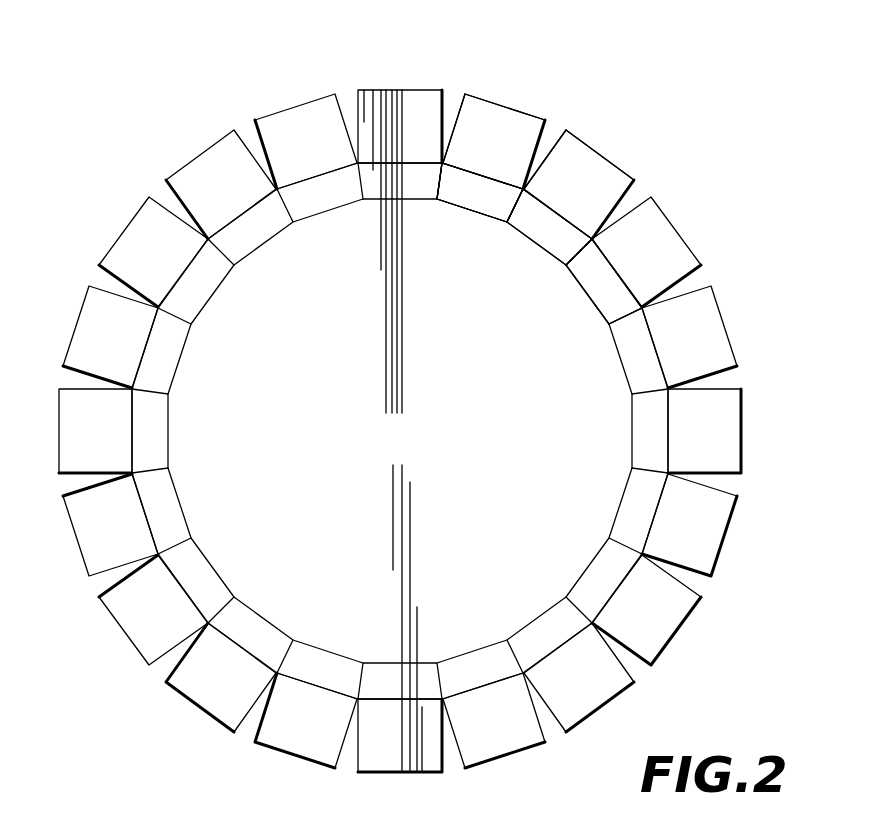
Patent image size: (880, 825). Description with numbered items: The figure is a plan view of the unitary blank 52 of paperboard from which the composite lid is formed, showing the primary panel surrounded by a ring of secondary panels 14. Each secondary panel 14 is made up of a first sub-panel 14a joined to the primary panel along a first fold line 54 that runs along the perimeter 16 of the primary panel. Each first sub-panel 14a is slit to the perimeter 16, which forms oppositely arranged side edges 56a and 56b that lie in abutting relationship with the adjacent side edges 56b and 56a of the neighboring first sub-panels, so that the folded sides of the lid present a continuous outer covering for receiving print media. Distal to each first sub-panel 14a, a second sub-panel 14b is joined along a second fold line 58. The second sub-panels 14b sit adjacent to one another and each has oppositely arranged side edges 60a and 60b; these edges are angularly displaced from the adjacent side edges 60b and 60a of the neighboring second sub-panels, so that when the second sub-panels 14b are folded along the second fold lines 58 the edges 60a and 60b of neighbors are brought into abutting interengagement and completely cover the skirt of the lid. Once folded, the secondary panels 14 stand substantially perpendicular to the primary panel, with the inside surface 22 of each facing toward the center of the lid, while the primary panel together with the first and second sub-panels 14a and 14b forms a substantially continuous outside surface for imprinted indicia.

The secondary panel 14 is at (518, 103).
The first sub-panel 14a is at (540, 225).
The second sub-panel 14b is at (495, 120).
The perimeter 16 is at (218, 293).
The inside surface 22 is at (720, 432).
The unitary blank 52 is at (422, 453).
The first fold line 54 is at (566, 252).
The side edge 56a is at (515, 228).
The side edge 56b is at (512, 192).
The second fold line 58 is at (474, 178).
The side edge 60a is at (458, 115).
The side edge 60b is at (541, 132).